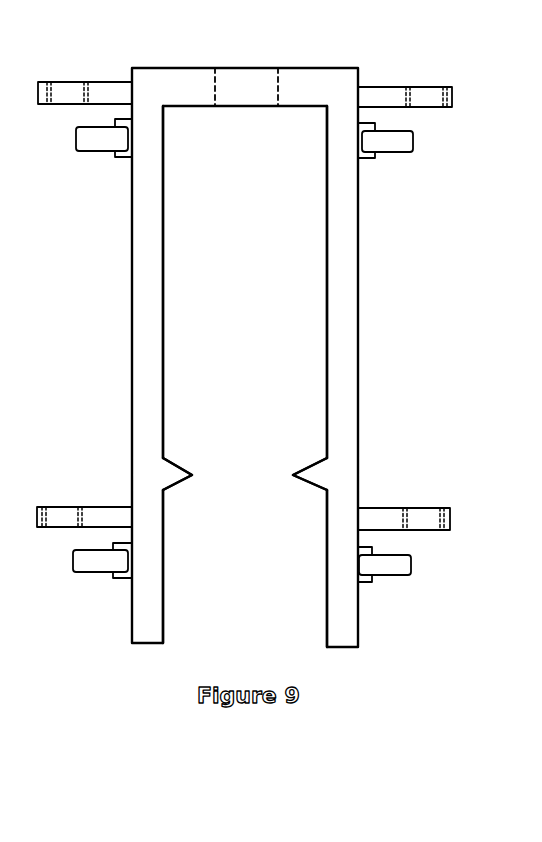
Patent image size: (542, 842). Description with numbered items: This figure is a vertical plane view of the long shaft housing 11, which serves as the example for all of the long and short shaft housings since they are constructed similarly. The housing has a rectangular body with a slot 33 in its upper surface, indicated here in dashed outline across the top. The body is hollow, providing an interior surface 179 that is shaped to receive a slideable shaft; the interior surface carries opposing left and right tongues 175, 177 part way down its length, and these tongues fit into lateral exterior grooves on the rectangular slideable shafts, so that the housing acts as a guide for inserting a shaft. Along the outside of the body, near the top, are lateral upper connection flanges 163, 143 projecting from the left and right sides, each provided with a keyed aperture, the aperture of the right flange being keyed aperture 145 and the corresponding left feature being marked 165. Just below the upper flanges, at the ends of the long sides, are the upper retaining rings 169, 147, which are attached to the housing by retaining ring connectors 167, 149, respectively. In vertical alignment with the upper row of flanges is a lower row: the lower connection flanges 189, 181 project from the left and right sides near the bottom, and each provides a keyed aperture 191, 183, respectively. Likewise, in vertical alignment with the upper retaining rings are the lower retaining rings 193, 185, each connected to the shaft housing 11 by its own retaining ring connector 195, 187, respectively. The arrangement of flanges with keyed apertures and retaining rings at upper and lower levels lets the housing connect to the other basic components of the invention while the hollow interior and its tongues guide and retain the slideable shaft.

The long shaft housing 11 is at (358, 323).
The slot 33 is at (279, 79).
The lateral upper connection flange 143 is at (445, 87).
The keyed aperture 145 is at (378, 87).
The retaining ring 147 is at (405, 152).
The retaining ring connector 149 is at (365, 158).
The lateral upper connection flange 163 is at (48, 82).
The mounting bracket 165 is at (92, 82).
The retaining ring connector 167 is at (120, 157).
The retaining ring 169 is at (83, 150).
The left tongue 175 is at (182, 482).
The right tongue 177 is at (300, 482).
The interior surface 179 is at (327, 178).
The lower connection flange 181 is at (372, 508).
The keyed aperture 183 is at (441, 508).
The lower retaining ring 185 is at (411, 566).
The retaining ring connector 187 is at (365, 582).
The lower connection flange 189 is at (93, 507).
The keyed aperture 191 is at (45, 525).
The lower retaining ring 193 is at (78, 572).
The retaining ring connector 195 is at (120, 578).